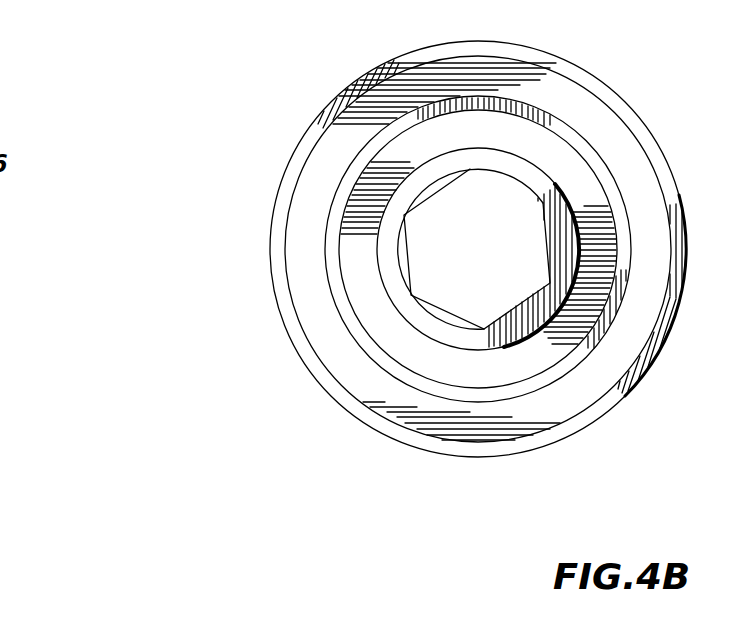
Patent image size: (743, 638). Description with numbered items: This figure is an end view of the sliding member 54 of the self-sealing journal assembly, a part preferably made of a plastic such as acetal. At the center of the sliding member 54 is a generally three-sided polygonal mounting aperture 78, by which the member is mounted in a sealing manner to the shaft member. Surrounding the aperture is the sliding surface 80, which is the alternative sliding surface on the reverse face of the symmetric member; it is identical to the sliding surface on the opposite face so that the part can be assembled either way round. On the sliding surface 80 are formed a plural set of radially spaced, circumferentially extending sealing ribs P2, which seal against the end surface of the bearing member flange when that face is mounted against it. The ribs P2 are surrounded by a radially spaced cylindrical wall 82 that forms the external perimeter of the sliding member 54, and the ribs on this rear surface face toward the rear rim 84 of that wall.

The sliding member 54 is at (392, 60).
The polygonal mounting aperture 78 is at (483, 258).
The sliding surface 80 is at (404, 134).
The cylindrical wall 82 is at (687, 208).
The rear rim 84 is at (316, 379).
The ribs P2 is at (542, 172).